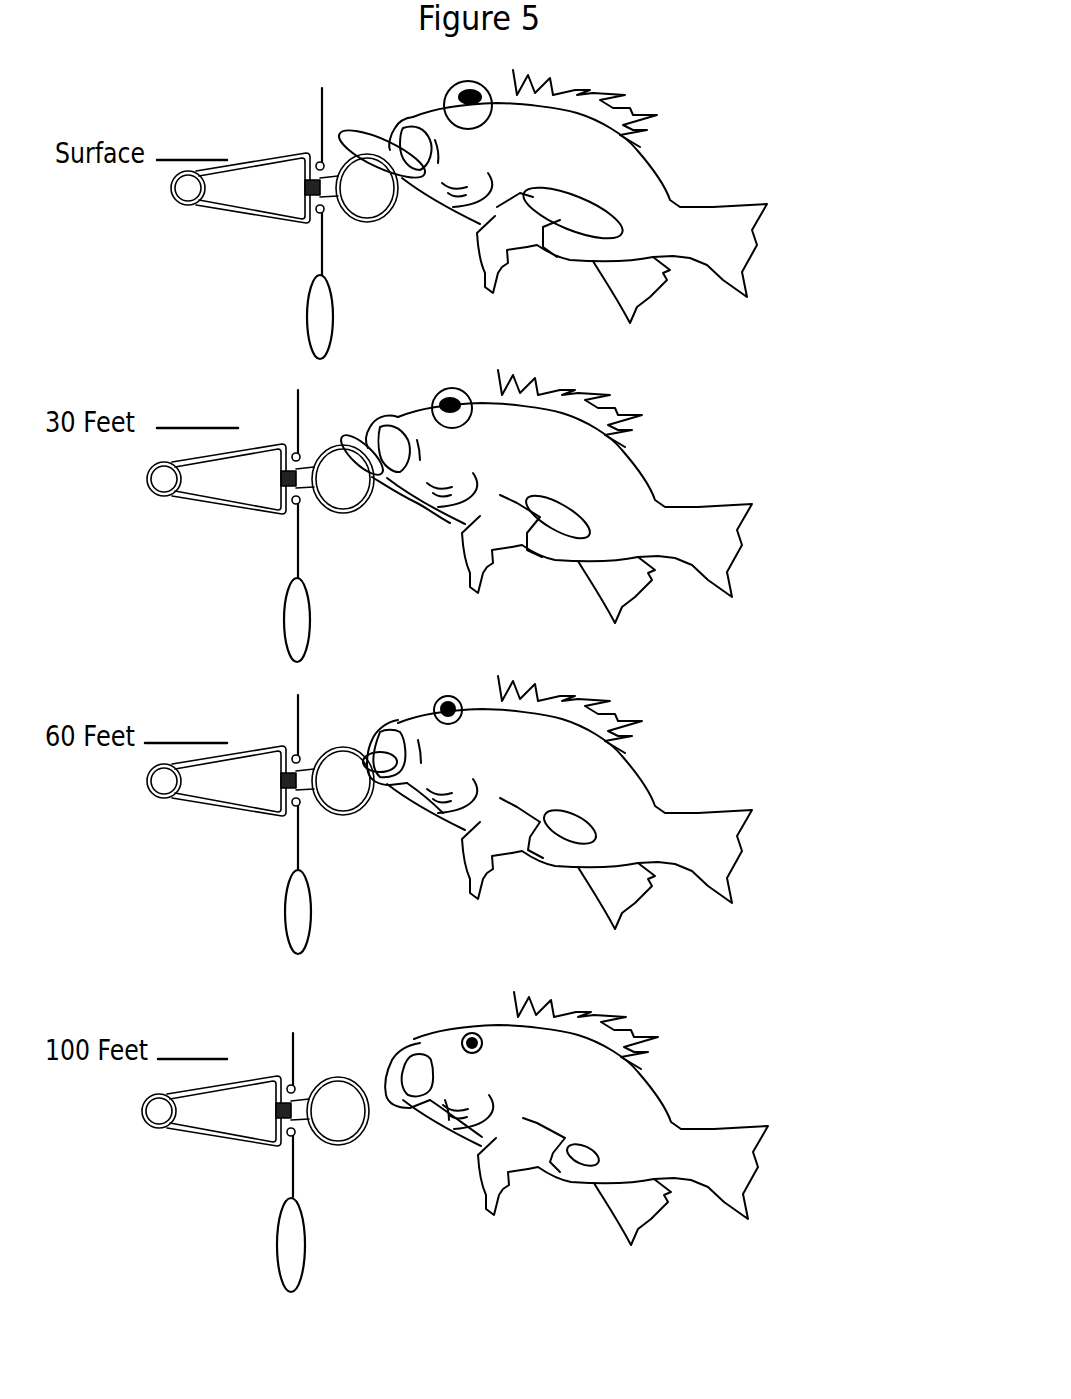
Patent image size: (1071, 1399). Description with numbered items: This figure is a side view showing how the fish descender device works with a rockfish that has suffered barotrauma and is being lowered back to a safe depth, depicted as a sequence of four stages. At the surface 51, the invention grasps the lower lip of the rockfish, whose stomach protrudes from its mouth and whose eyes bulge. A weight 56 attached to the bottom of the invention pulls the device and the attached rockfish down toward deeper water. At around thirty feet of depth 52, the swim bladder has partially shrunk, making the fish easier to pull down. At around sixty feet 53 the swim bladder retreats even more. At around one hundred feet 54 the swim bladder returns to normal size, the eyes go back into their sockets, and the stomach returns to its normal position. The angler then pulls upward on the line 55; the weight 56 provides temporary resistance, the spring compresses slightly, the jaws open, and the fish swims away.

The surface 51 is at (693, 172).
The 30 feet depth 52 is at (683, 460).
The 60 feet depth 53 is at (659, 767).
The 100 feet depth 54 is at (693, 1092).
The line 55 is at (293, 1098).
The weight 56 is at (283, 1245).